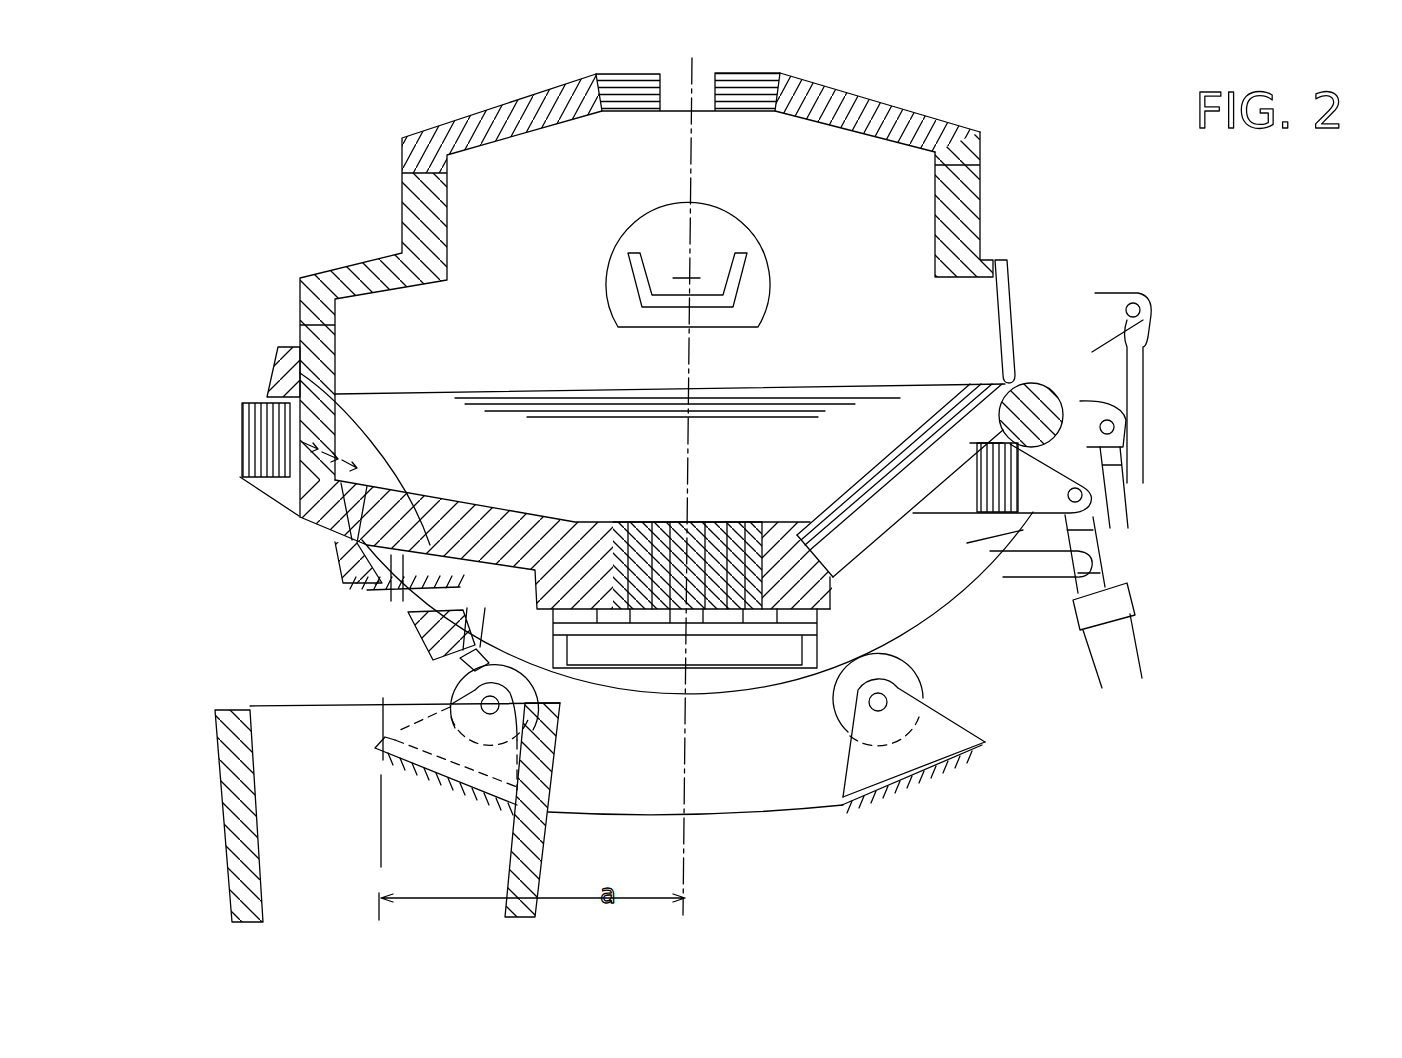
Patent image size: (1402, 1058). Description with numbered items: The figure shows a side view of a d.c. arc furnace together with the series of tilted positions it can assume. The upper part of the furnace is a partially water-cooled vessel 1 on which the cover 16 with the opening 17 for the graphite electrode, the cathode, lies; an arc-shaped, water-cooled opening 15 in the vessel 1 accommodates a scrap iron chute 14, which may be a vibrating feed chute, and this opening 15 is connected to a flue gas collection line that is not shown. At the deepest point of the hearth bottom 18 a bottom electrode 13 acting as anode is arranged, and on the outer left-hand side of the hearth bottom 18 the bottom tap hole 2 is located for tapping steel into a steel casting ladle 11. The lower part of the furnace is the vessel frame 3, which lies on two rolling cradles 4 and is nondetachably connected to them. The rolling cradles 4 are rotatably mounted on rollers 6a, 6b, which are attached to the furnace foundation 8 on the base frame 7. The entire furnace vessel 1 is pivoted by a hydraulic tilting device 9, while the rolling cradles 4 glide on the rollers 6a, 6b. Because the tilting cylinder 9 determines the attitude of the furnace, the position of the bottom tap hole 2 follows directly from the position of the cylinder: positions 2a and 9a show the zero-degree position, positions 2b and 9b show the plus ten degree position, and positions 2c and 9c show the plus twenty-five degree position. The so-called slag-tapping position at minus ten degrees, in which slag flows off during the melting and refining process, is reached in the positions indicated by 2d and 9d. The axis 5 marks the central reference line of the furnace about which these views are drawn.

The water-cooled vessel 1 is at (973, 197).
The bottom tap hole 2 is at (290, 518).
The bottom tap hole position at 0° 2a is at (337, 540).
The bottom tap hole position at +10° 2b is at (347, 595).
The bottom tap hole position at +25° 2c is at (433, 660).
The bottom tap hole position at −10° 2d is at (297, 467).
The vessel frame 3 is at (293, 440).
The rolling cradles 4 is at (1023, 530).
The central axis 5 is at (697, 272).
The roller 6a is at (447, 690).
The roller 6b is at (925, 694).
The base frame 7 is at (985, 745).
The furnace foundation 8 is at (940, 778).
The hydraulic tilting device 9 is at (1125, 655).
The tilting cylinder position at 0° 9a is at (1095, 517).
The tilting cylinder position at +10° 9b is at (1115, 490).
The tilting cylinder position at +25° 9c is at (1146, 362).
The tilting cylinder position at −10° 9d is at (1058, 562).
The steel casting ladle 11 is at (243, 872).
The bottom electrode (anode) 13 is at (765, 580).
The scrap iron chute 14 is at (733, 283).
The water-cooled opening 15 is at (767, 258).
The cover 16 is at (927, 127).
The opening for the graphite electrode 17 is at (716, 73).
The hearth bottom 18 is at (300, 373).